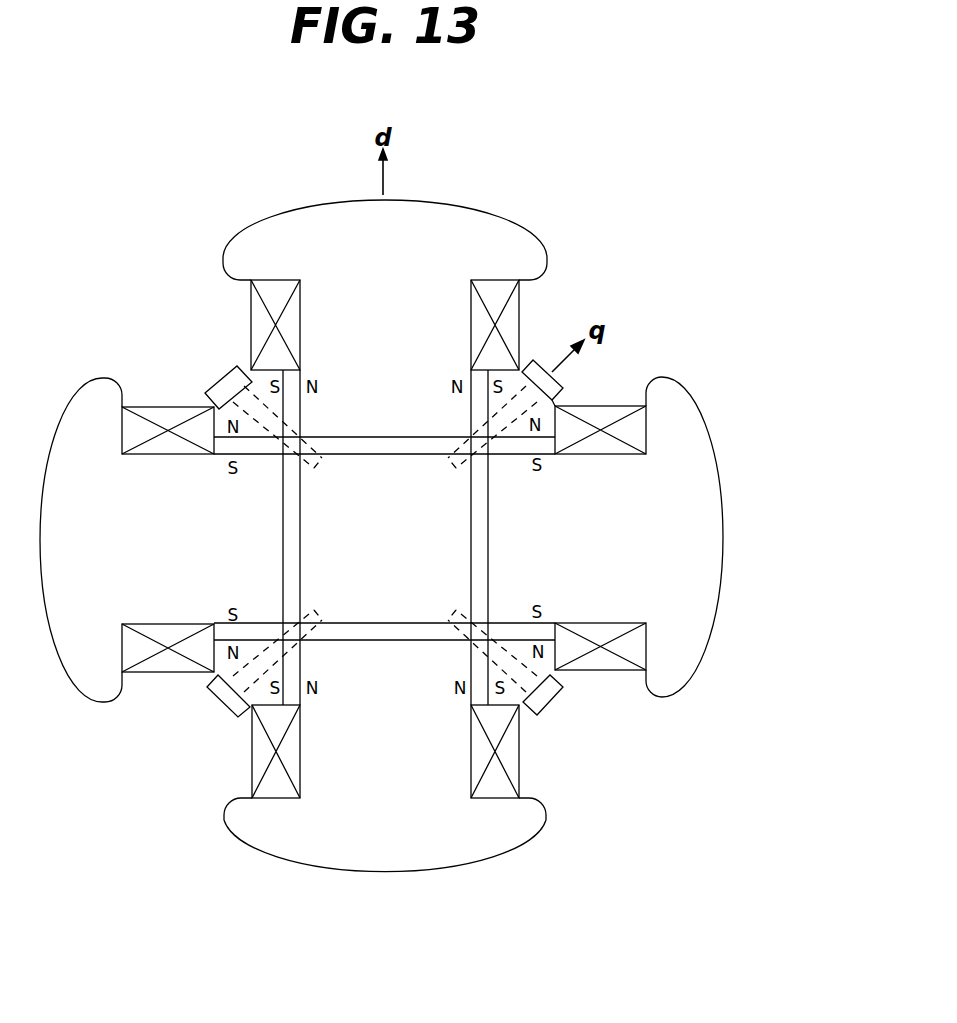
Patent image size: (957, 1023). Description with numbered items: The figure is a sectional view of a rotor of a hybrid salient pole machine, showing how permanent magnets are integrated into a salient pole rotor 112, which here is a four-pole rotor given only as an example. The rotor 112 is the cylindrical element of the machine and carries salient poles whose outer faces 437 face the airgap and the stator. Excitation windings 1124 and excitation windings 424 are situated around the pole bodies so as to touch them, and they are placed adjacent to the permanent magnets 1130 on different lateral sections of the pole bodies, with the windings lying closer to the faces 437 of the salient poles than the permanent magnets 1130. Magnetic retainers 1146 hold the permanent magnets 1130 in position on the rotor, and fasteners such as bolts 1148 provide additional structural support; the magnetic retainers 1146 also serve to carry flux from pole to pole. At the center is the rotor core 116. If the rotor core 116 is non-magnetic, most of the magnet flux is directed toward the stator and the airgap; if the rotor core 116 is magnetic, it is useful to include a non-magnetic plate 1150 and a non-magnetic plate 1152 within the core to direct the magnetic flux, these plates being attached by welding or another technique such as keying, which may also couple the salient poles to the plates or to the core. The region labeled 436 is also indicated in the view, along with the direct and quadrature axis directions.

The salient pole rotor 112 is at (150, 834).
The rotor core 116 is at (408, 547).
The excitation windings 424 is at (258, 325).
The rotor pole region 436 is at (575, 547).
The faces of the salient poles 437 is at (675, 400).
The excitation windings 1124 is at (512, 752).
The permanent magnets 1130 is at (477, 385).
The magnetic retainers 1146 is at (512, 378).
The bolts 1148 is at (555, 393).
The non-magnetic plate 1150 is at (478, 537).
The non-magnetic plate 1152 is at (378, 631).